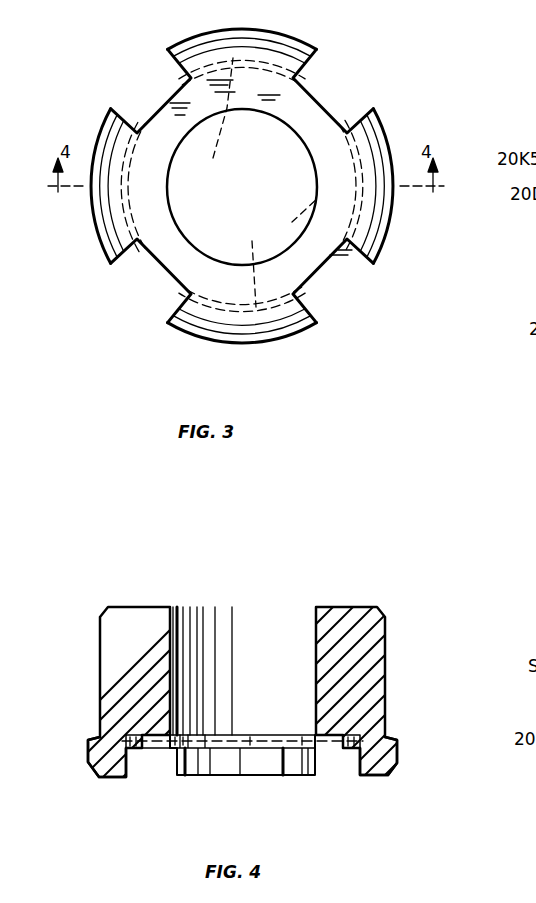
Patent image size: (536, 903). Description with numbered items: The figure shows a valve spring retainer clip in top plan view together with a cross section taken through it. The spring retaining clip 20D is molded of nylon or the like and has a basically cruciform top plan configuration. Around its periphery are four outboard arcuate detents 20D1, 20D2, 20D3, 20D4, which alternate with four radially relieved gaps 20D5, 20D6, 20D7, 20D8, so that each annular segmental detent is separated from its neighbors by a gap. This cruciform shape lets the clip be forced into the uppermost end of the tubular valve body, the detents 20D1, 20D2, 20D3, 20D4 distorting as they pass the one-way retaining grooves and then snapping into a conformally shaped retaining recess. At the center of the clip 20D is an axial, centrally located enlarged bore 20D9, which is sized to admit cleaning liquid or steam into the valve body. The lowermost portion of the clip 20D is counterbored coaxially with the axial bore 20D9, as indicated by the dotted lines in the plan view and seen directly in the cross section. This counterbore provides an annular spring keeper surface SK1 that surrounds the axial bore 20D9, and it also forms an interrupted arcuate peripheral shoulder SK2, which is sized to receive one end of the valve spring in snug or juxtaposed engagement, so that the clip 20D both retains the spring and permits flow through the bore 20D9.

In FIG. 3, the spring retaining clip 20D is at (76, 103).
In FIG. 4, the spring retaining clip 20D is at (66, 774).
In FIG. 3, the outboard arcuate detent 20D1 is at (93, 210).
In FIG. 4, the outboard arcuate detent 20D1 is at (92, 739).
In FIG. 3, the outboard arcuate detent 20D2 is at (246, 29).
In FIG. 4, the outboard arcuate detent 20D2 is at (170, 760).
In FIG. 3, the outboard arcuate detent 20D3 is at (392, 137).
In FIG. 4, the outboard arcuate detent 20D3 is at (397, 748).
In FIG. 3, the outboard arcuate detent 20D4 is at (267, 340).
In FIG. 3, the radially relieved gap 20D5 is at (144, 92).
In FIG. 3, the radially relieved gap 20D6 is at (338, 104).
In FIG. 3, the radially relieved gap 20D7 is at (333, 265).
In FIG. 3, the radially relieved gap 20D8 is at (167, 298).
In FIG. 3, the enlarged bore 20D9 is at (285, 194).
In FIG. 4, the enlarged bore 20D9 is at (306, 676).
In FIG. 4, the annular spring keeper surface SK1 is at (155, 737).
In FIG. 3, the interrupted arcuate peripheral shoulder SK2 is at (250, 182).
In FIG. 4, the interrupted arcuate peripheral shoulder SK2 is at (138, 749).